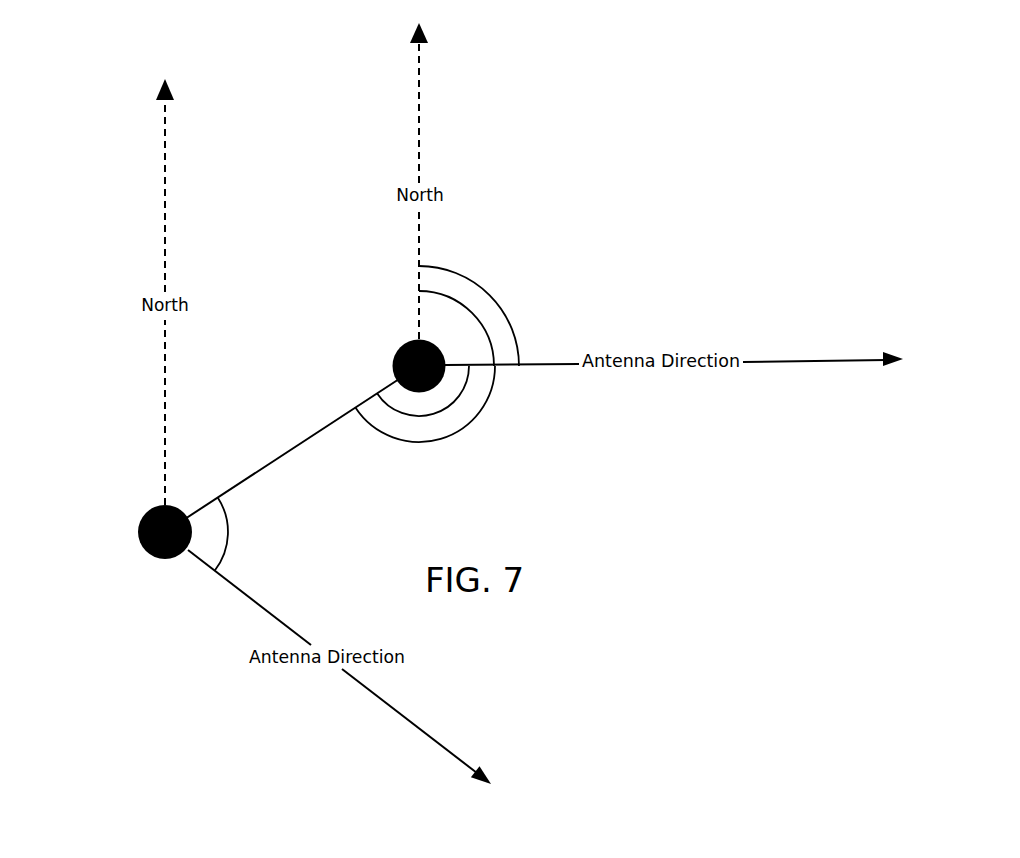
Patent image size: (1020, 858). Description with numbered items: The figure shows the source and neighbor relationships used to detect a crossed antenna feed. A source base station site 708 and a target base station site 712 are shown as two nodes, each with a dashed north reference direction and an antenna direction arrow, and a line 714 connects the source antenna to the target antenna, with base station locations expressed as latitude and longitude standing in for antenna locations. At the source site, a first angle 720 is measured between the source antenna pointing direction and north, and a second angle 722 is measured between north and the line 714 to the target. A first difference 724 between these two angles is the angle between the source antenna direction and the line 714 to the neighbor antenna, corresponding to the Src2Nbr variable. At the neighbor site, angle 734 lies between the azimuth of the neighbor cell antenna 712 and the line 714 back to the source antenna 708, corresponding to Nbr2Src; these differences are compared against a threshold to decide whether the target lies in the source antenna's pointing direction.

The source base station site 708 is at (395, 348).
The target base station site 712 is at (138, 531).
The line 714 is at (300, 446).
The first angle 720 is at (487, 290).
The second angle 722 is at (488, 394).
The first difference 724 is at (438, 414).
The angle 734 is at (228, 528).